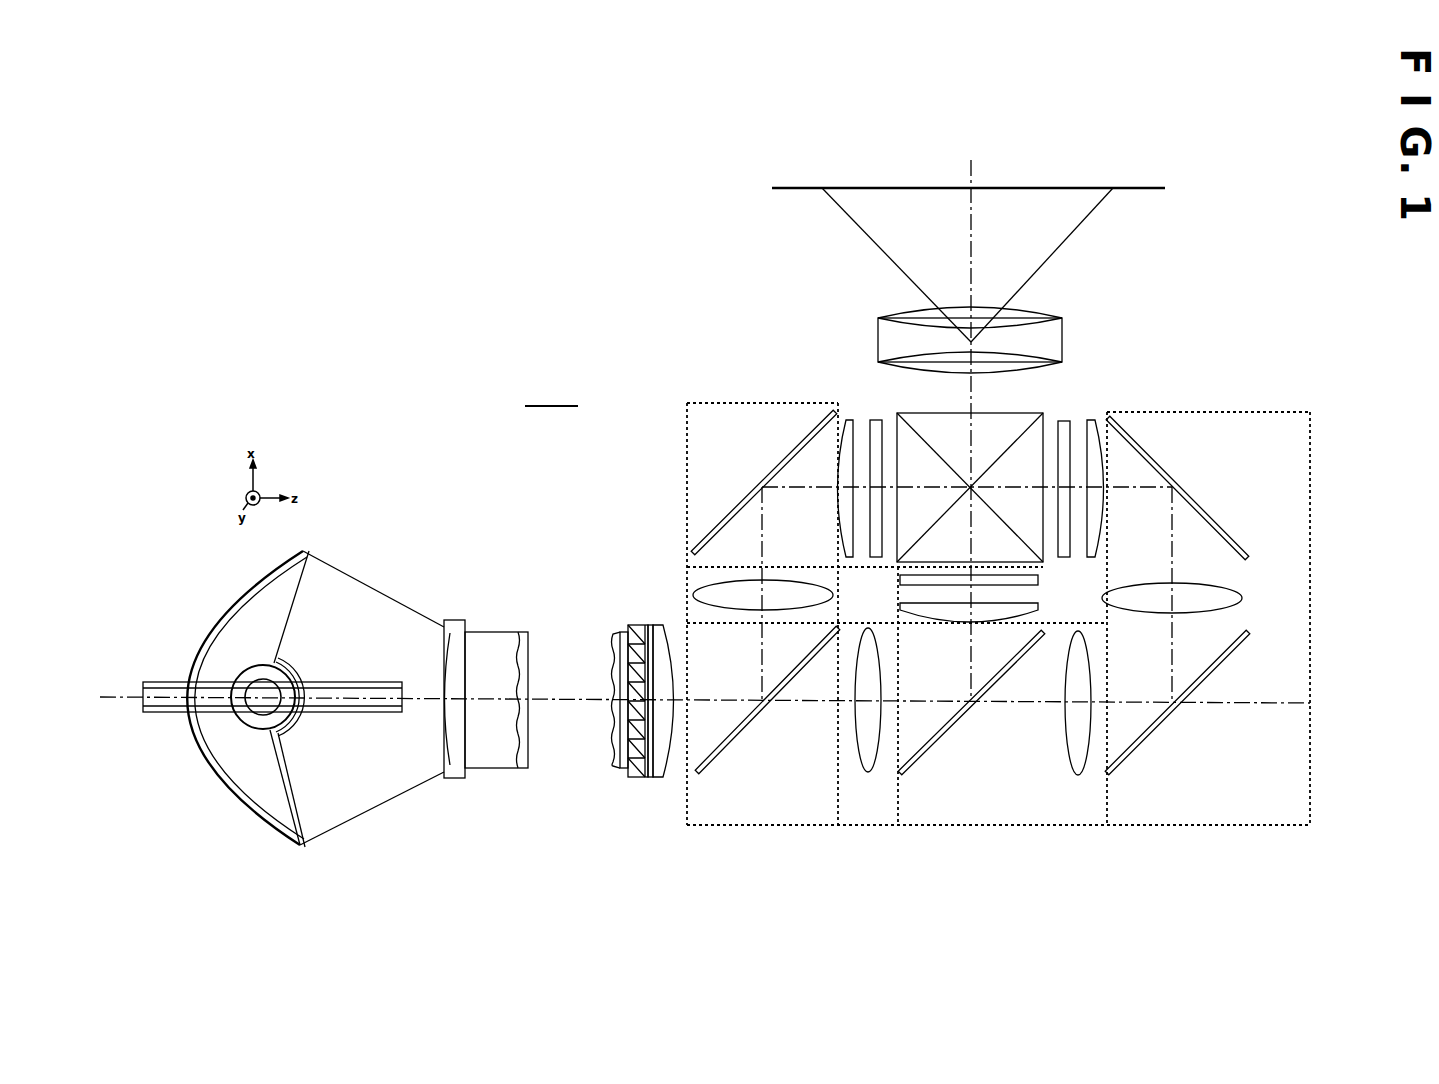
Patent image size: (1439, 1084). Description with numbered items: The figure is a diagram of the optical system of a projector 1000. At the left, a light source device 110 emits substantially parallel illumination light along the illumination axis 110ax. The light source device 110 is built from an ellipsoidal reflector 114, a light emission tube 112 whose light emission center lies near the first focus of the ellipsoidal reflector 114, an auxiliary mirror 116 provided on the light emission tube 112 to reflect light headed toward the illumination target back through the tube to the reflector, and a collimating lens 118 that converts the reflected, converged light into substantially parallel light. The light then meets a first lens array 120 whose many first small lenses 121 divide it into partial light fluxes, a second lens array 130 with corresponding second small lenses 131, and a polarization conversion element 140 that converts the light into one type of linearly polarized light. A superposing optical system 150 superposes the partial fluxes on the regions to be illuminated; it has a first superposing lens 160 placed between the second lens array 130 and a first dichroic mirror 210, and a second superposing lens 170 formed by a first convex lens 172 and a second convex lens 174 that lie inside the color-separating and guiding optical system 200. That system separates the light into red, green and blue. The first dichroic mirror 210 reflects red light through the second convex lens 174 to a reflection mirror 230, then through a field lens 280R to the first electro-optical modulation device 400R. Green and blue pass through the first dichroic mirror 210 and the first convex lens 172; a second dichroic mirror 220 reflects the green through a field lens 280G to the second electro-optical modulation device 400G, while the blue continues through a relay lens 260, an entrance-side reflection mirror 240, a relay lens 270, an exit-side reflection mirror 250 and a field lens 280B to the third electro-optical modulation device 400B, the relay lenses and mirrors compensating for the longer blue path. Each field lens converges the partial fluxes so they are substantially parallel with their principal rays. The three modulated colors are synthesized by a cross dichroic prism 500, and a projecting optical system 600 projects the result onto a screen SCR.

The projector 1000 is at (551, 395).
The light source device 110 is at (295, 737).
The illumination optical axis 110ax is at (127, 694).
The light emission tube 112 is at (300, 847).
The ellipsoidal reflector 114 is at (250, 816).
The auxiliary mirror 116 is at (287, 733).
The collimating lens 118 is at (374, 718).
The first lens array 120 is at (491, 726).
The first small lens 121 is at (518, 632).
The second lens array 130 is at (613, 728).
The second small lens 131 is at (615, 632).
The polarization conversion element 140 is at (636, 625).
The superposing optical system 150 is at (870, 892).
The first superposing lens 160 is at (665, 780).
The second superposing lens 170 is at (870, 832).
The first convex lens 172 is at (868, 774).
The second convex lens 174 is at (835, 594).
The color-separating and guiding optical system 200 is at (1060, 830).
The first dichroic mirror 210 is at (722, 749).
The second dichroic mirror 220 is at (925, 750).
The reflection mirror 230 is at (732, 507).
The entrance-side reflection mirror 240 is at (1135, 747).
The exit-side reflection mirror 250 is at (1216, 525).
The relay lens 260 is at (1078, 776).
The relay lens 270 is at (1244, 600).
The field lens 280R is at (840, 417).
The field lens 280G is at (1038, 613).
The field lens 280B is at (1093, 417).
The first electro-optical modulation device 400R is at (872, 418).
The second electro-optical modulation device 400G is at (1068, 583).
The third electro-optical modulation device 400B is at (1065, 419).
The cross dichroic prism 500 is at (905, 413).
The projecting optical system 600 is at (1062, 340).
The screen SCR is at (805, 190).